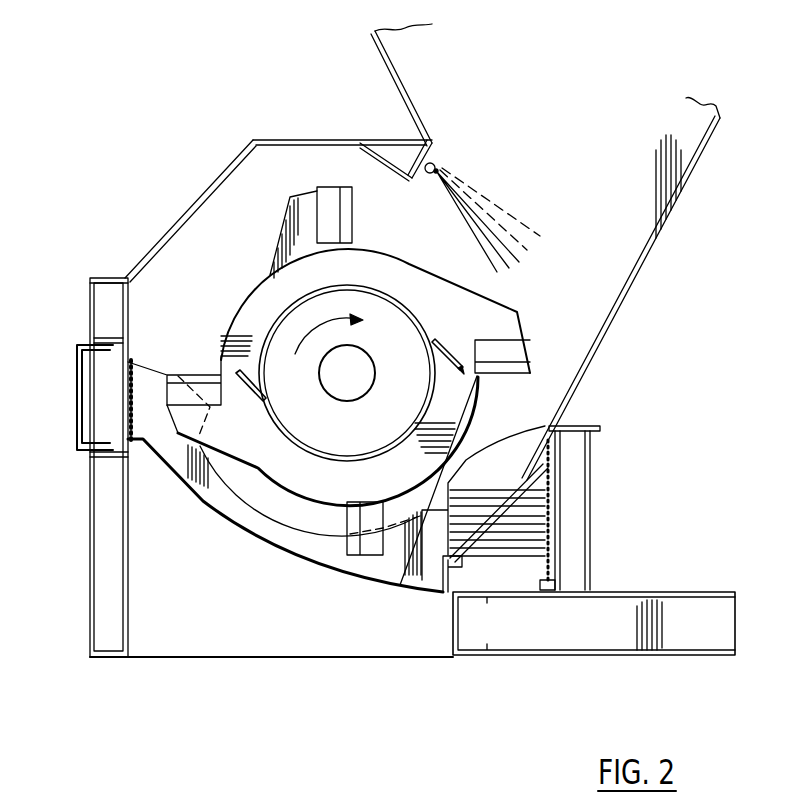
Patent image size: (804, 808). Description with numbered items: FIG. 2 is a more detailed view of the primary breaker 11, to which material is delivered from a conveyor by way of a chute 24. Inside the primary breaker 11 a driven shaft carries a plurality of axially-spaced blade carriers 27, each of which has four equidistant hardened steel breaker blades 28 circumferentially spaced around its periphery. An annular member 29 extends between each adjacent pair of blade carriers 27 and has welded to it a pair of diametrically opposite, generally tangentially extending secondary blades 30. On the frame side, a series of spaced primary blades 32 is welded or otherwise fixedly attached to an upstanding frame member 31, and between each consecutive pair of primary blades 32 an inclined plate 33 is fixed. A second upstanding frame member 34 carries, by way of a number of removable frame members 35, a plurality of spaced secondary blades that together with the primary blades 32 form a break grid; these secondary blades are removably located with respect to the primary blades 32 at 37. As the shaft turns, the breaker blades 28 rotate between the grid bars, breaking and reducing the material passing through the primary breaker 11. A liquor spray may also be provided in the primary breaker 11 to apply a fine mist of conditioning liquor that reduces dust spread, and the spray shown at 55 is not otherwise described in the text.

The primary breaker 11 is at (182, 212).
The chute 24 is at (688, 200).
The blade carrier 27 is at (404, 282).
The breaker blade 28 is at (330, 185).
The annular member 29 is at (345, 288).
The secondary blade 30 is at (250, 388).
The upstanding frame member 31 is at (570, 508).
The primary blade 32 is at (512, 448).
The inclined plate 33 is at (540, 482).
The second upstanding frame member 34 is at (150, 372).
The removable frame member 35 is at (100, 380).
The location of secondary blades 37 is at (416, 592).
The spray nozzle 55 is at (437, 166).